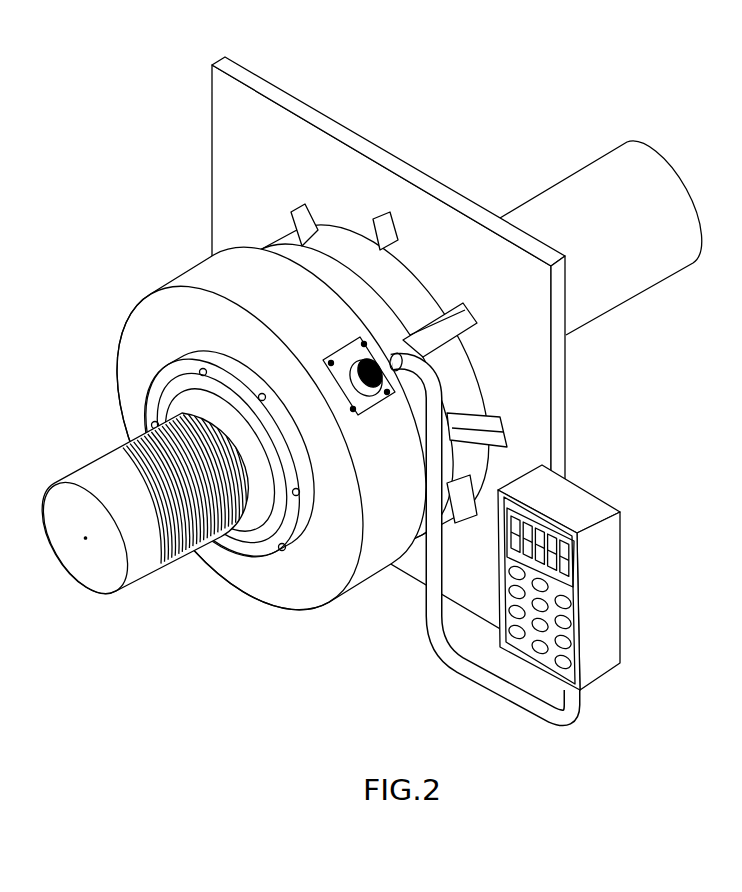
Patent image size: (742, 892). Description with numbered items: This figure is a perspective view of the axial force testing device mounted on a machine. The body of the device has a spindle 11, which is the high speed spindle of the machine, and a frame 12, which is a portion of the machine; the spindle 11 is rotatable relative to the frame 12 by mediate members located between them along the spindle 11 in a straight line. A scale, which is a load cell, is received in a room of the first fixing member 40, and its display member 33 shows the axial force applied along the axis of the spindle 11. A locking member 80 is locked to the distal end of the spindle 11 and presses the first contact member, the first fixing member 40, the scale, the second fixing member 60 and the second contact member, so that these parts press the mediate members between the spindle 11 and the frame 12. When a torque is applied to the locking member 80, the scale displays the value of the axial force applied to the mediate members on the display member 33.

The spindle 11 is at (634, 272).
The frame 12 is at (216, 116).
The display member 33 is at (611, 600).
The first fixing member 40 is at (160, 320).
The second fixing member 60 is at (252, 240).
The locking member 80 is at (145, 415).